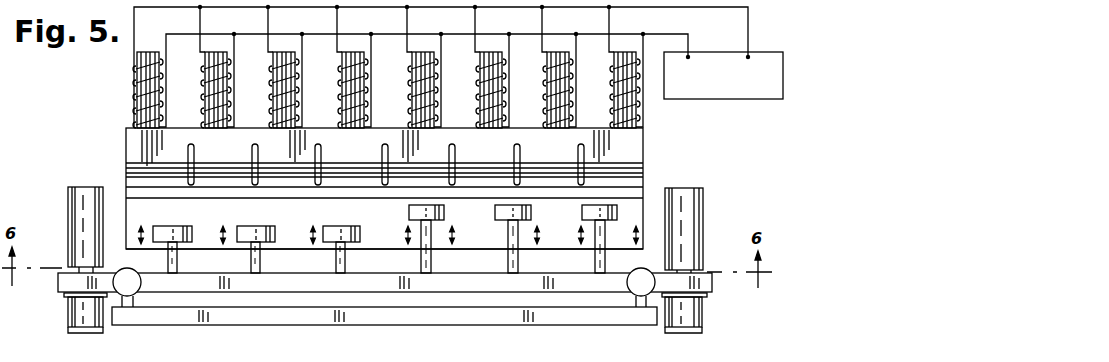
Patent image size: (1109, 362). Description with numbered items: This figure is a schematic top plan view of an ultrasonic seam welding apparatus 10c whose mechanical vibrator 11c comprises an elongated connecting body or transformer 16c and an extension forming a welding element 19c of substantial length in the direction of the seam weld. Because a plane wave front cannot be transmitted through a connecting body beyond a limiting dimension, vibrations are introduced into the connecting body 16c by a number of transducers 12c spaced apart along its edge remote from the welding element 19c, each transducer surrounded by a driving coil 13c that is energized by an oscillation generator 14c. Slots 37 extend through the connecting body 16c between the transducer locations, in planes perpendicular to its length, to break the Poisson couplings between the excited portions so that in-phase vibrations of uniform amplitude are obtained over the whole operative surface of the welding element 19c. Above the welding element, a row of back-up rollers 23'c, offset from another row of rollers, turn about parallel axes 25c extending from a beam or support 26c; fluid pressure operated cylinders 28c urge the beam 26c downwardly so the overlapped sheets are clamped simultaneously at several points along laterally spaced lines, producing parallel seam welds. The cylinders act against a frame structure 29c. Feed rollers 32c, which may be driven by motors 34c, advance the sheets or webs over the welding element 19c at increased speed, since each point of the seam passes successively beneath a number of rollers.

The ultrasonic seam welding apparatus 10c is at (697, 146).
The mechanical vibrator 11c is at (676, 137).
The transducers 12c is at (601, 74).
The driving coil 13c is at (613, 77).
The oscillation generator 14c is at (765, 114).
The connecting body or transformer 16c is at (619, 156).
The welding element 19c is at (627, 243).
The back-up rollers 23'c is at (385, 223).
The axes 25c is at (594, 262).
The beam or support 26c is at (283, 283).
The fluid pressure operated cylinders 28c is at (646, 338).
The lower bar 29c is at (384, 338).
The feed rollers 32c is at (721, 172).
The motors 34c is at (733, 318).
The slots 37 is at (576, 151).